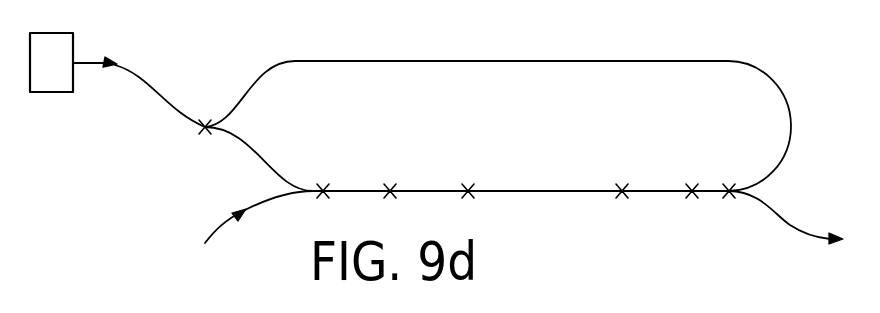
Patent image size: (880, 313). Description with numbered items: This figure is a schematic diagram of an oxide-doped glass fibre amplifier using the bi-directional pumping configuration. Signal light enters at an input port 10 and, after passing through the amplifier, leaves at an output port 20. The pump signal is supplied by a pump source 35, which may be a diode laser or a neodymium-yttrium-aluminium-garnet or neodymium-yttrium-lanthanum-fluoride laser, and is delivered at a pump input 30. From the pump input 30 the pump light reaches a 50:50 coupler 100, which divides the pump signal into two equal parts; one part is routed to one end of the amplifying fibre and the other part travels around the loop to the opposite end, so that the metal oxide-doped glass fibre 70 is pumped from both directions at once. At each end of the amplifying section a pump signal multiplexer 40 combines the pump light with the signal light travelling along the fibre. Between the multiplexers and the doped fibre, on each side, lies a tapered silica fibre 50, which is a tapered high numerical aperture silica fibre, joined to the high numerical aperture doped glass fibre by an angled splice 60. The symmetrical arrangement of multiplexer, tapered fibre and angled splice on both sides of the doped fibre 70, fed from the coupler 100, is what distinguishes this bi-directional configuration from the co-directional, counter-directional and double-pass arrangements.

The input port 10 is at (220, 223).
The output port 20 is at (787, 223).
The pump input 30 is at (89, 63).
The pump source 35 is at (70, 92).
The pump signal multiplexer 40 is at (530, 170).
The tapered silica fibre 50 is at (542, 170).
The angled splice 60 is at (543, 170).
The metal oxide-doped glass fibre 70 is at (572, 192).
The 50:50 coupler 100 is at (206, 105).